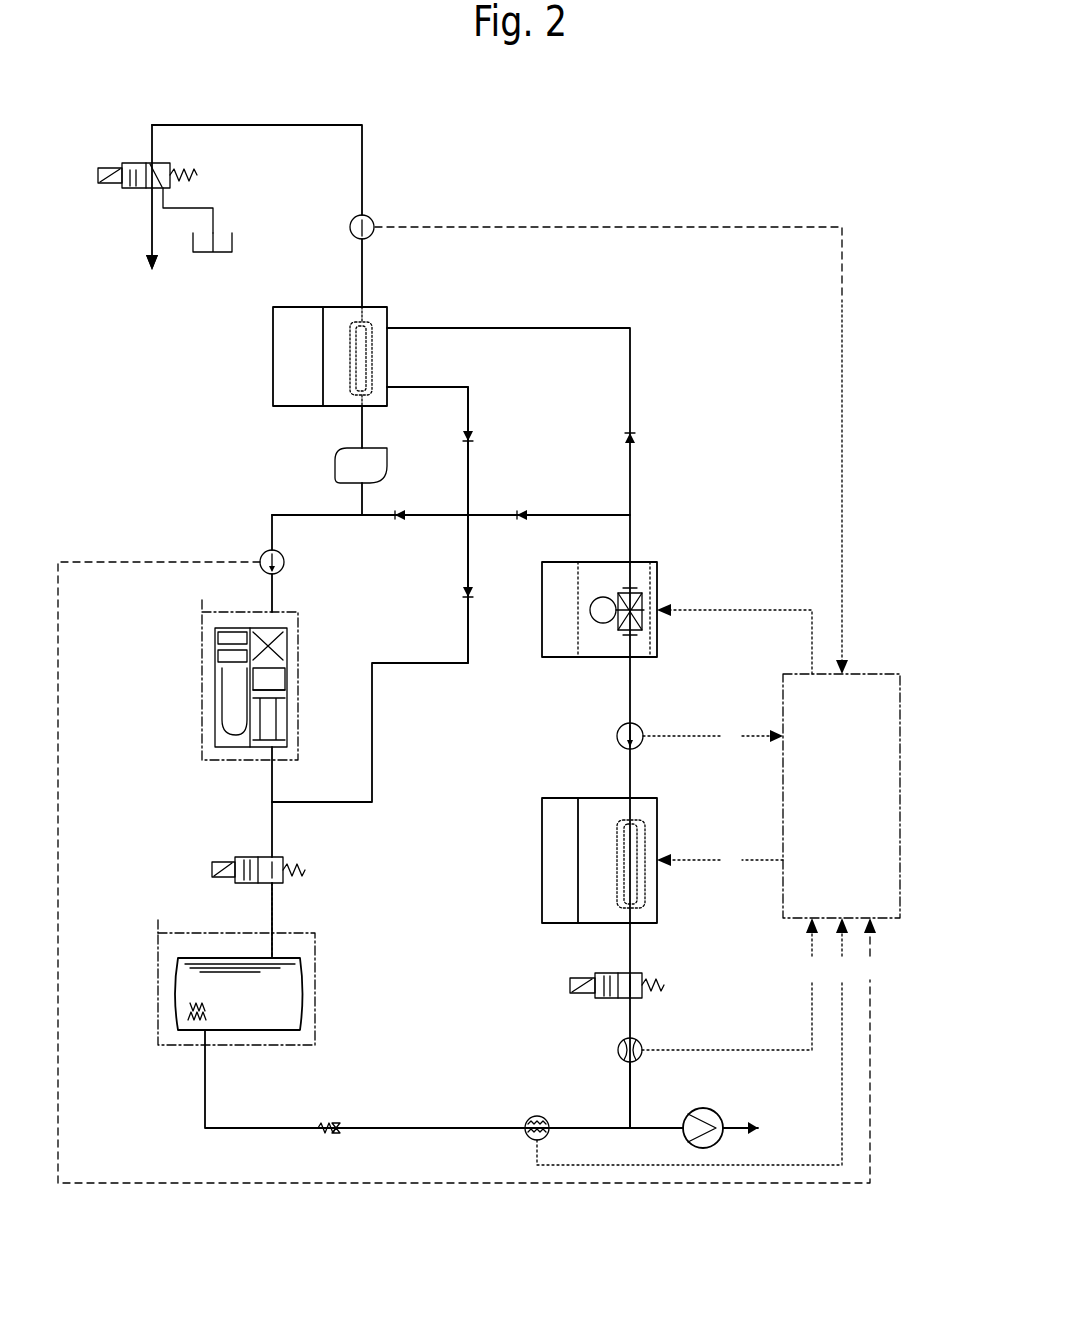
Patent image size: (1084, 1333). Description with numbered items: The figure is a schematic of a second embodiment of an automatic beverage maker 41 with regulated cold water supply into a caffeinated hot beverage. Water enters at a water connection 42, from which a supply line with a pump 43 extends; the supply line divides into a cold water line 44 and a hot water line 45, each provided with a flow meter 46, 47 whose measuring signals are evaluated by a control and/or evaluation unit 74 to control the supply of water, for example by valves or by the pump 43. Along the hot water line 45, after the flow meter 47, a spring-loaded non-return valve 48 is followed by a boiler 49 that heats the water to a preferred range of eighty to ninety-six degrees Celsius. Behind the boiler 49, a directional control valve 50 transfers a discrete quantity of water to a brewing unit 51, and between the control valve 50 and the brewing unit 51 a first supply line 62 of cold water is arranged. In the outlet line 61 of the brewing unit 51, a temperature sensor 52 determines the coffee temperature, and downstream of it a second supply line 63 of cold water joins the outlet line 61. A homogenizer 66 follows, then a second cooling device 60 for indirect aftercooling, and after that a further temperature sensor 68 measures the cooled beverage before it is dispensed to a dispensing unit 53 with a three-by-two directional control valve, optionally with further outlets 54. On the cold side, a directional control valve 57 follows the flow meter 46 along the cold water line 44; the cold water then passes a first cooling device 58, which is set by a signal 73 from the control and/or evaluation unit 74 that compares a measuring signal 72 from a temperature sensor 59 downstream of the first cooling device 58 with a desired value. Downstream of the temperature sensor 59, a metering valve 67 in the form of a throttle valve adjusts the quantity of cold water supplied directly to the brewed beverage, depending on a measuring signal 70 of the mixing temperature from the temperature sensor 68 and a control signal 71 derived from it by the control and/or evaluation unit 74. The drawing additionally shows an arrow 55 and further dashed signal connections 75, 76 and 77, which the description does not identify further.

The automatic beverage maker 41 is at (880, 600).
The water connection 42 is at (757, 1120).
The pump 43 is at (725, 1140).
The cold water line 44 is at (633, 1092).
The hot water line 45 is at (597, 1130).
The flow meter 46 is at (641, 1045).
The flow meter 47 is at (528, 1118).
The non-return valve 48 is at (336, 1120).
The boiler 49 is at (318, 965).
The directional control valve 50 is at (288, 862).
The brewing unit 51 is at (298, 690).
The temperature sensor 52 is at (285, 565).
The dispensing unit 53 is at (133, 163).
The further outlets 54 is at (235, 248).
The outlet 55 is at (148, 262).
The directional control valve 57 is at (641, 975).
The first cooling device 58 is at (660, 900).
The temperature sensor 59 is at (643, 733).
The second cooling device 60 is at (388, 357).
The outlet line 61 is at (285, 512).
The first supply line of cold water 62 is at (470, 470).
The second supply line of cold water 63 is at (495, 520).
The homogenizer 66 is at (388, 462).
The metering valve 67 is at (660, 640).
The temperature sensor 68 is at (372, 218).
The measuring signal 70 is at (846, 301).
The control signal 71 is at (715, 606).
The measuring signal 72 is at (686, 740).
The signal 73 is at (745, 858).
The control and/or evaluation unit 74 is at (902, 870).
The signal line 75 is at (766, 1050).
The signal line 76 is at (684, 1168).
The signal line 77 is at (604, 1185).